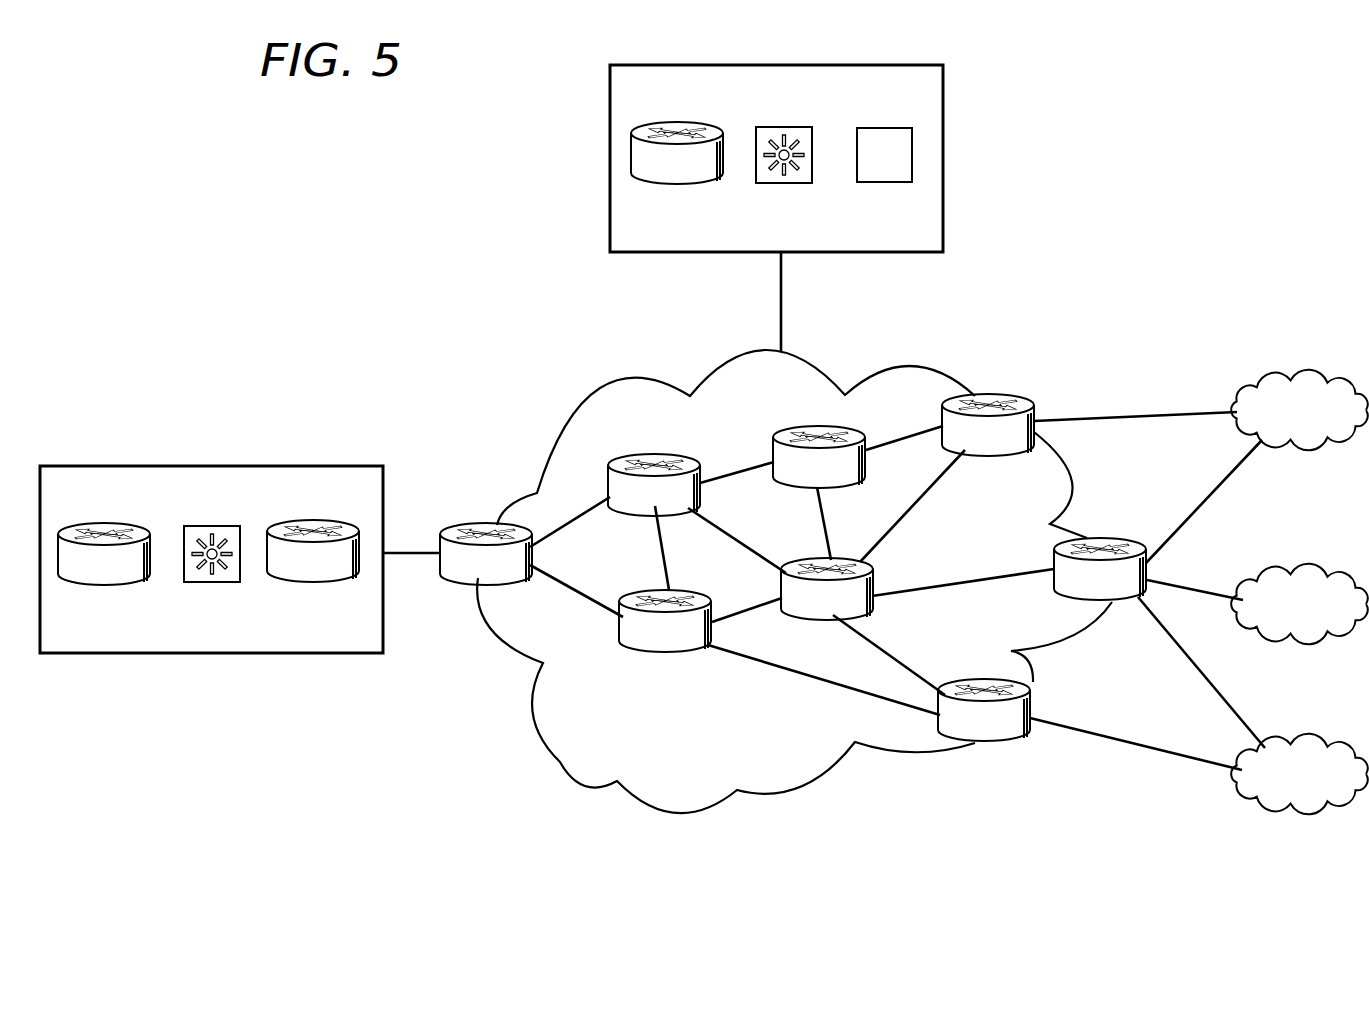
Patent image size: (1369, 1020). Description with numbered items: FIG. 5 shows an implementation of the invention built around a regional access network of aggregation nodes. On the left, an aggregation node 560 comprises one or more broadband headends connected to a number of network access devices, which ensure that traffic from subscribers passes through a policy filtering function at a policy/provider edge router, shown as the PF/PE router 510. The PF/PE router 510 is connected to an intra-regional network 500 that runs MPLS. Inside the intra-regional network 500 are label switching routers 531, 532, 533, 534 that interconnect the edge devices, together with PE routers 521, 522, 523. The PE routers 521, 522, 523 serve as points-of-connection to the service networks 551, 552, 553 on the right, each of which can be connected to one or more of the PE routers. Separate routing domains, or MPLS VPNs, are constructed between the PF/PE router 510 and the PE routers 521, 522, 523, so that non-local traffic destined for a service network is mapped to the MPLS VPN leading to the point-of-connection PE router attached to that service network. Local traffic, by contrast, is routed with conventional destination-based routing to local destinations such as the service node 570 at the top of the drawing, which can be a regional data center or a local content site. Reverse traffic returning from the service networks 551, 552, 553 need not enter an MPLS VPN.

The intra-regional network 500 is at (558, 763).
The PF/PE router 510 is at (478, 530).
The PE router 521 is at (998, 394).
The PE router 522 is at (1104, 539).
The PE router 523 is at (975, 680).
The label switching router 531 is at (658, 455).
The label switching router 532 is at (786, 428).
The label switching router 533 is at (629, 648).
The label switching router 534 is at (843, 558).
The service network 551 is at (1305, 378).
The service network 552 is at (1305, 573).
The service network 553 is at (1305, 742).
The aggregation node 560 is at (189, 476).
The service node 570 is at (620, 103).